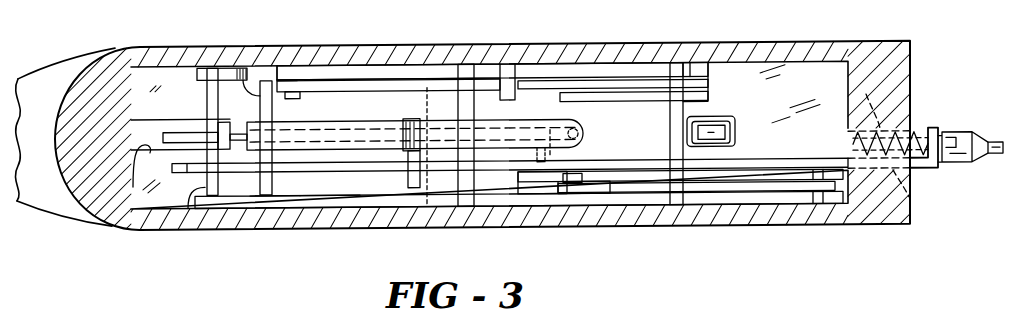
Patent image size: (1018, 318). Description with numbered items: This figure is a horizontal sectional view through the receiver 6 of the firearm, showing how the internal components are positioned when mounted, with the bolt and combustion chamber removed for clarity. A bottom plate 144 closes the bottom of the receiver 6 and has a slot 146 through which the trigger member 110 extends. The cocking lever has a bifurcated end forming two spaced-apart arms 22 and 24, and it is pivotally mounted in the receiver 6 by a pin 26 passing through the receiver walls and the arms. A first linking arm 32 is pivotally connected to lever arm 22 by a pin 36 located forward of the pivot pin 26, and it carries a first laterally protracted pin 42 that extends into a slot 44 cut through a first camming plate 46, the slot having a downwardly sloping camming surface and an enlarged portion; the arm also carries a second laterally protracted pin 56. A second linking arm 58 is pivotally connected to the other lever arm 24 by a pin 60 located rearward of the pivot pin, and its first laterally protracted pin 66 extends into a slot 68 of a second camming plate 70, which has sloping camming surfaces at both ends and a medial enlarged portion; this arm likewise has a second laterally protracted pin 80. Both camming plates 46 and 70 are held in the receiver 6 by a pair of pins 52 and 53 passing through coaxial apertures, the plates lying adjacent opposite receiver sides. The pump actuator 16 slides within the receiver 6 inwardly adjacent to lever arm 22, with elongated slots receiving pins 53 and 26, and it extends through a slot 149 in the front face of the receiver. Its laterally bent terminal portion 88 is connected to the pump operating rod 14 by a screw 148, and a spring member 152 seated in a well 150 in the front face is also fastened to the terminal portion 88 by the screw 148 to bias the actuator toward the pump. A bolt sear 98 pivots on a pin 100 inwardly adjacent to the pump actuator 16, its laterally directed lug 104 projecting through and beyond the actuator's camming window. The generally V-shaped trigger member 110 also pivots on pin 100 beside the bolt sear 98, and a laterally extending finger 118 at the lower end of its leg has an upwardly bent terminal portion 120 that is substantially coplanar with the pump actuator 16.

The receiver 6 is at (145, 50).
The pump operating rod 14 is at (988, 167).
The pump actuator 16 is at (769, 164).
The cocking lever arm 22 is at (770, 202).
The cocking lever arm 24 is at (697, 68).
The pin 26 is at (687, 143).
The first linking arm 32 is at (653, 189).
The pin 36 is at (812, 212).
The first laterally protracted pin 42 is at (568, 196).
The slot 44 is at (325, 199).
The first camming plate 46 is at (281, 201).
The pin 52 is at (200, 197).
The pin 53 is at (461, 186).
The second laterally protracted pin 56 is at (585, 174).
The second linking arm 58 is at (450, 82).
The pin 60 is at (595, 67).
The first laterally protracted pin 66 is at (310, 67).
The slot 68 is at (281, 67).
The second camming plate 70 is at (391, 67).
The second laterally protracted pin 80 is at (300, 97).
The laterally bent terminal portion 88 is at (940, 138).
The bolt sear 98 is at (387, 129).
The pin 100 is at (243, 68).
The laterally directed lug 104 is at (410, 182).
The trigger member 110 is at (360, 123).
The laterally extending finger 118 is at (552, 158).
The upwardly bent terminal portion 120 is at (543, 133).
The bottom plate 144 is at (153, 200).
The slot 146 is at (118, 198).
The screw 148 is at (920, 140).
The slot 149 is at (912, 208).
The well 150 is at (852, 100).
The spring member 152 is at (857, 141).